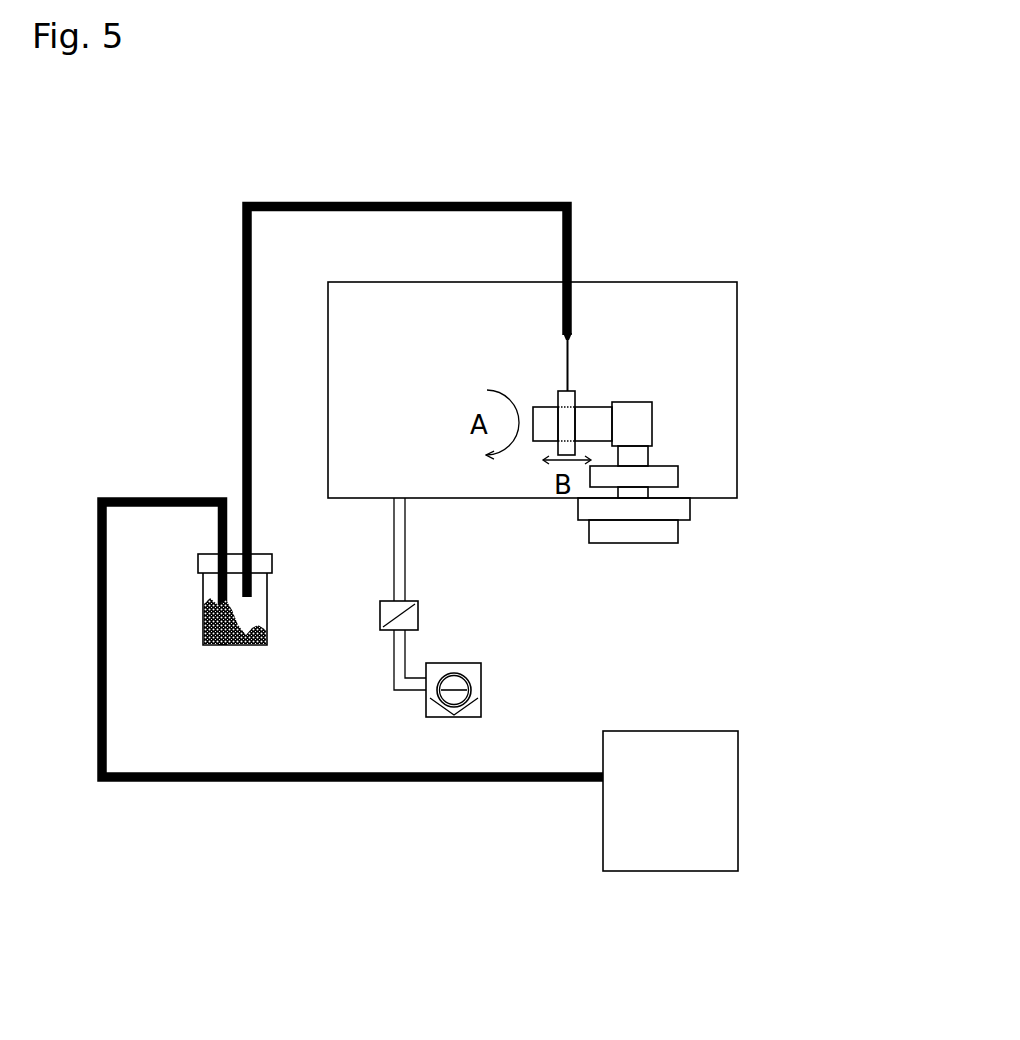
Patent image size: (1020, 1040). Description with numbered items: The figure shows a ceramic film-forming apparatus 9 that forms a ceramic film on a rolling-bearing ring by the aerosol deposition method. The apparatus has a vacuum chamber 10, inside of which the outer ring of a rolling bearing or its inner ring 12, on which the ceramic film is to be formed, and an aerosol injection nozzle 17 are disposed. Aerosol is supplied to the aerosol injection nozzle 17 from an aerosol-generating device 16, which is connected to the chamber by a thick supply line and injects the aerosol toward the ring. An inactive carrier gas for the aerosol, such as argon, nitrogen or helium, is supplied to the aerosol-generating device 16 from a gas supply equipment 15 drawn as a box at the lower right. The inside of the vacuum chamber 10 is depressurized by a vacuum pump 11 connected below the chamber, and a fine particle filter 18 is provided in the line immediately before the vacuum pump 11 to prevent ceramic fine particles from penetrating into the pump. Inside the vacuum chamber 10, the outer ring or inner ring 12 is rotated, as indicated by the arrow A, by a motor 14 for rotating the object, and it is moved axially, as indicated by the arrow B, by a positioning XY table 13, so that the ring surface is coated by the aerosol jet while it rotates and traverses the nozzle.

The ceramic film-forming apparatus 9 is at (642, 220).
The vacuum chamber 10 is at (702, 282).
The vacuum pump 11 is at (483, 705).
The inner ring 12 is at (568, 398).
The positioning XY table 13 is at (663, 478).
The motor 14 is at (630, 437).
The gas supply equipment 15 is at (672, 742).
The aerosol-generating device 16 is at (268, 602).
The aerosol injection nozzle 17 is at (570, 367).
The fine particle filter 18 is at (378, 613).